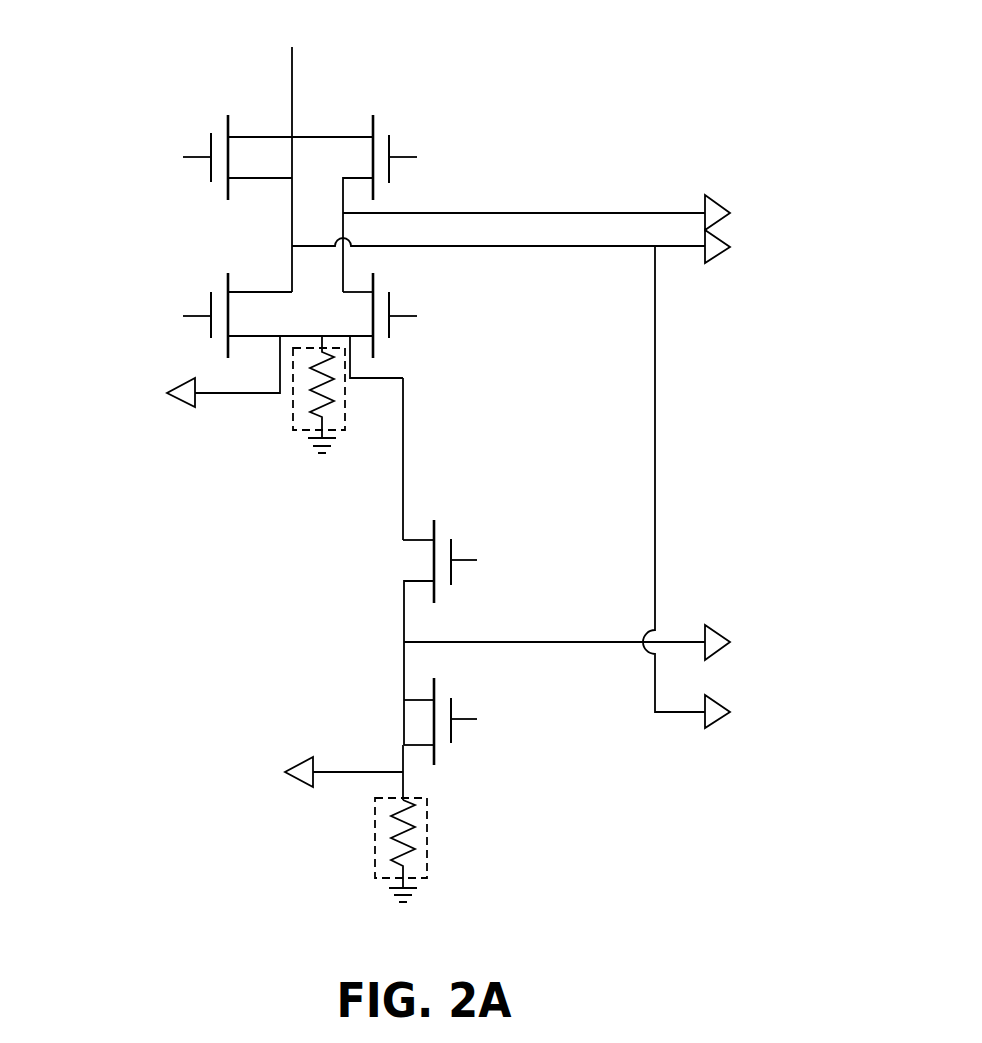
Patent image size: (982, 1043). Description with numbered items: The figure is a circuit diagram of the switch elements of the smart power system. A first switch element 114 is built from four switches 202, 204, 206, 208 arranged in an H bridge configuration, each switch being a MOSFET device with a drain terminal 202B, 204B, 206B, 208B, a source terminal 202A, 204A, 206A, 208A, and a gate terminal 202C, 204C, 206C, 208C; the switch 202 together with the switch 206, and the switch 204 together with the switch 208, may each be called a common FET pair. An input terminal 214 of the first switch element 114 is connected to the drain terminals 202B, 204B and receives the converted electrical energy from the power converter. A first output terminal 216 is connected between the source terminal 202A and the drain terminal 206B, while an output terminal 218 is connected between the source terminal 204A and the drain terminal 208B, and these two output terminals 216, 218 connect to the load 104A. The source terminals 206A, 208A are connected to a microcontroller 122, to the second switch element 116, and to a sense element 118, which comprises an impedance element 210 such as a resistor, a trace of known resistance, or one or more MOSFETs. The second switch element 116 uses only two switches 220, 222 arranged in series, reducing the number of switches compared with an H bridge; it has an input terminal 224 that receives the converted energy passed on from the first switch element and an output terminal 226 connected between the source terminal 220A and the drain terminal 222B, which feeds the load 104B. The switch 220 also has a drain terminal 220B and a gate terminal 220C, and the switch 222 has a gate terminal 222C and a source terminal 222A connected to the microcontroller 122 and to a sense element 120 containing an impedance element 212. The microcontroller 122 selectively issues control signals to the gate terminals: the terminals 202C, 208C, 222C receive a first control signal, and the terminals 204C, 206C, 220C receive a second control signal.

The first switch element 114 is at (368, 82).
The second switch element 116 is at (473, 462).
The sense element 118 is at (328, 408).
The sense element 120 is at (408, 865).
The microcontroller 122 is at (212, 625).
The load 104A is at (817, 231).
The load 104B is at (814, 680).
The switch 202 is at (249, 160).
The source terminal 202A is at (257, 181).
The drain terminal 202B is at (242, 135).
The gate terminal 202C is at (198, 160).
The switch 204 is at (411, 190).
The source terminal 204A is at (356, 182).
The drain terminal 204B is at (330, 135).
The gate terminal 204C is at (408, 153).
The switch 206 is at (244, 323).
The source terminal 206A is at (260, 339).
The drain terminal 206B is at (252, 290).
The gate terminal 206C is at (198, 318).
The switch 208 is at (443, 314).
The source terminal 208A is at (357, 343).
The drain terminal 208B is at (355, 288).
The gate terminal 208C is at (405, 313).
The impedance element 210 is at (332, 392).
The impedance element 212 is at (423, 847).
The input terminal 214 is at (291, 63).
The first output terminal 216 is at (463, 213).
The output terminal 218 is at (415, 246).
The switch 220 is at (435, 616).
The source terminal 220A is at (405, 625).
The drain terminal 220B is at (403, 530).
The gate terminal 220C is at (467, 562).
The switch 222 is at (479, 723).
The source terminal 222A is at (410, 751).
The drain terminal 222B is at (405, 660).
The gate terminal 222C is at (467, 720).
The input terminal 224 is at (405, 498).
The output terminal 226 is at (678, 638).